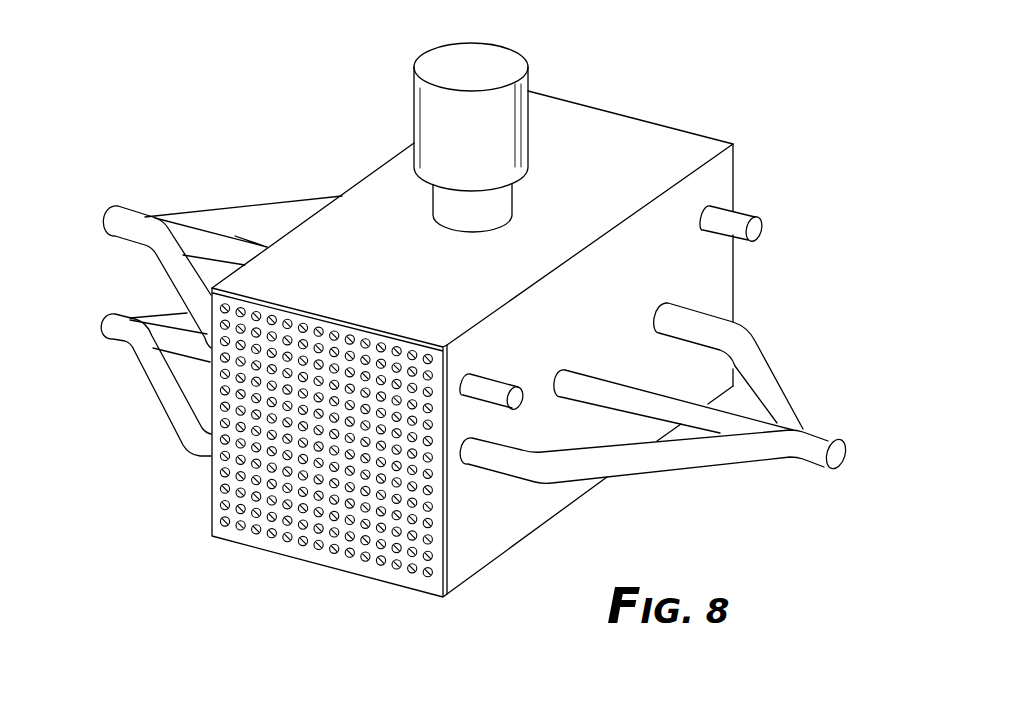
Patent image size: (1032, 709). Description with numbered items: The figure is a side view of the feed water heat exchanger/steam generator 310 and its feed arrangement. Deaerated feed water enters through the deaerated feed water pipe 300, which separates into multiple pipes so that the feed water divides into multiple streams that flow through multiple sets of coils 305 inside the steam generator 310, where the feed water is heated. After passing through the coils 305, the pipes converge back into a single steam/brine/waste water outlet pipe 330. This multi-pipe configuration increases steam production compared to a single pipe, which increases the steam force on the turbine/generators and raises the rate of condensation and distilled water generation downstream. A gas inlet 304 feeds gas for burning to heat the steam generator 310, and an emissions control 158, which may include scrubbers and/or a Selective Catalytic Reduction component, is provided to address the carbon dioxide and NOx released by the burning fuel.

The emissions control 158 is at (532, 88).
The deaerated feed water pipe 300 is at (128, 202).
The gas inlet 304 is at (113, 343).
The coils 305 is at (285, 457).
The steam generator 310 is at (390, 572).
The steam/brine/waste water outlet pipe 330 is at (823, 443).